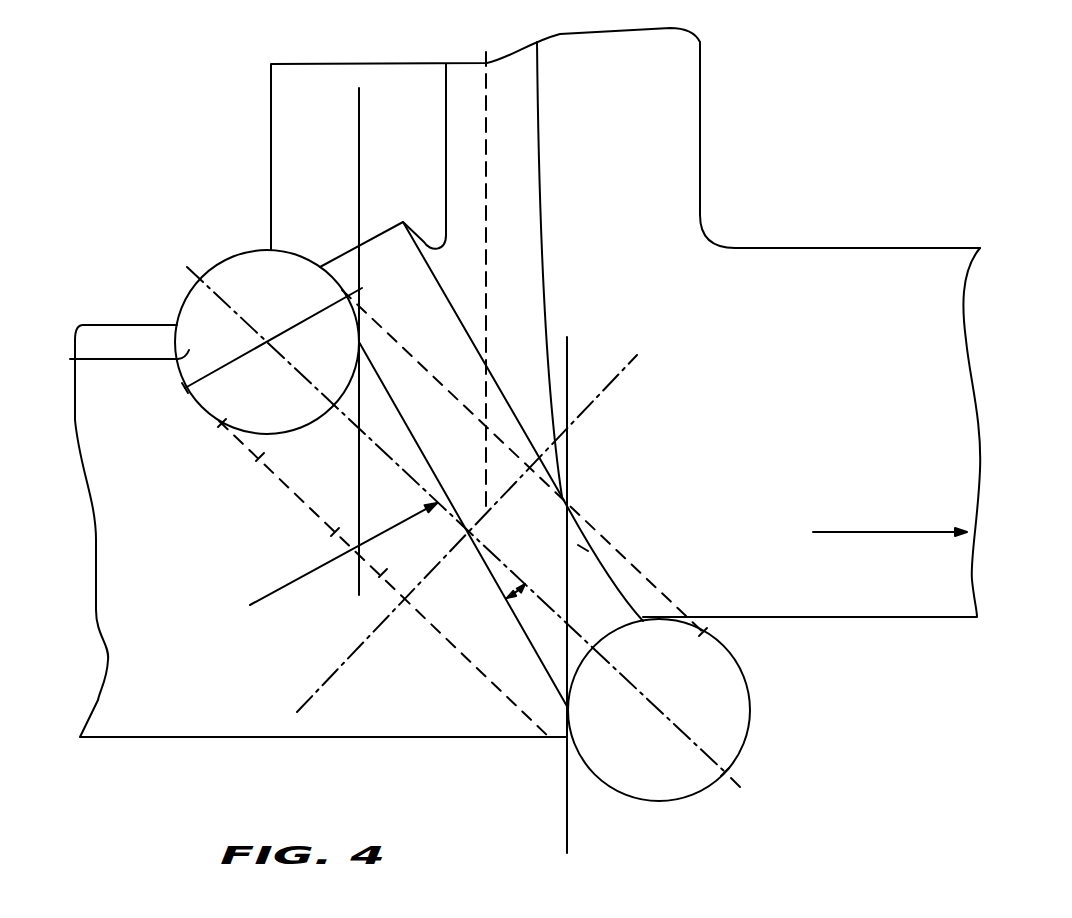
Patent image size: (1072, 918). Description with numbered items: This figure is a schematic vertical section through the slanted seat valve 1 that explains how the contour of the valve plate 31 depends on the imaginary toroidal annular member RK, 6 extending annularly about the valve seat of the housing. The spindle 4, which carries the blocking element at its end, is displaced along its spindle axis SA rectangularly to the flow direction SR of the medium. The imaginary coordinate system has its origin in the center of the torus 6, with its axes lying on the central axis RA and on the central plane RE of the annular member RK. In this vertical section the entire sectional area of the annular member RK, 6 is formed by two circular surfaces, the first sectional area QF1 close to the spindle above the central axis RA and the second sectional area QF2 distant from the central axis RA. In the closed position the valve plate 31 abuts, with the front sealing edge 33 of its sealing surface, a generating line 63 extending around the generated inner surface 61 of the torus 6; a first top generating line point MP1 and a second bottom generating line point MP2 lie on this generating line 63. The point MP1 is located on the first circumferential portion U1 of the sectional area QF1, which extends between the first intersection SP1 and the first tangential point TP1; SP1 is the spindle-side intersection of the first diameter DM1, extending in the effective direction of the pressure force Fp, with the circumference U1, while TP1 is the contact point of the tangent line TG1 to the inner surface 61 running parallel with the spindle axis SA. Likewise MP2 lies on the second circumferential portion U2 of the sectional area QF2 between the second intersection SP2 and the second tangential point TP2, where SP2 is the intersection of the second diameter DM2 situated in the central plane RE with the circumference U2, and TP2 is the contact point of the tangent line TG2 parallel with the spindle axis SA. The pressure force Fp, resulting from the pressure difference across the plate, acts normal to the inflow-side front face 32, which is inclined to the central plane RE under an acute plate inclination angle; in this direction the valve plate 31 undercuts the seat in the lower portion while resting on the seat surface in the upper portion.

The slanted seat valve 1 is at (893, 141).
The spindle 4 is at (465, 103).
The valve plate 31 is at (583, 548).
The valve plate front face 32 is at (535, 650).
The front sealing edge 33 is at (417, 440).
The torus 6 is at (227, 485).
The inner generated surface 61 is at (407, 552).
The generating line 63 is at (305, 538).
The annular member RK is at (258, 458).
The spindle axis SA is at (487, 85).
The first tangent line TG1 is at (357, 112).
The second tangent line TG2 is at (567, 846).
The first circumferential portion U1 is at (178, 310).
The second circumferential portion U2 is at (750, 732).
The first diameter DM1 is at (185, 387).
The second diameter DM2 is at (712, 759).
The first generating line point MP1 is at (358, 342).
The second generating line point MP2 is at (569, 709).
The first tangential point TP1 is at (152, 252).
The second tangential point TP2 is at (567, 707).
The first intersection SP1 is at (340, 289).
The second intersection SP2 is at (593, 648).
The first sectional area QF1 is at (72, 359).
The second sectional area QF2 is at (723, 660).
The central axis RA is at (304, 708).
The central plane RE is at (728, 778).
The flow direction SR is at (871, 533).
The pressure force Fp is at (326, 567).